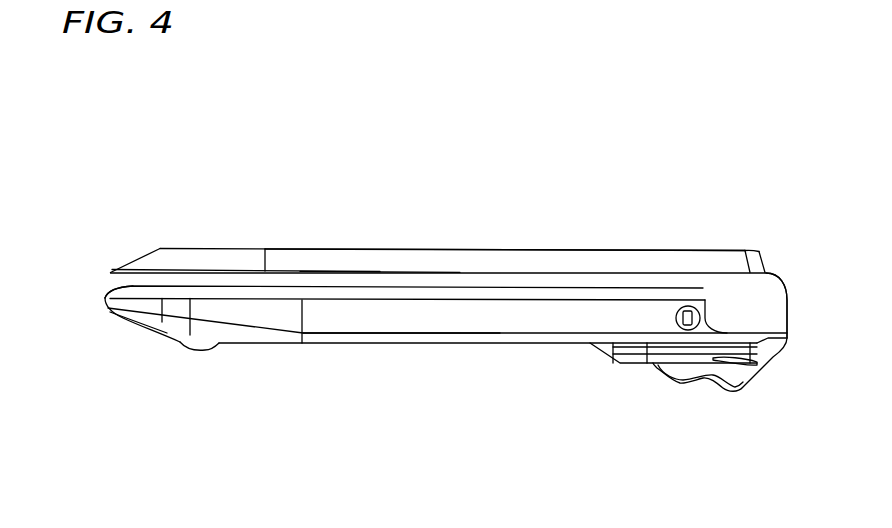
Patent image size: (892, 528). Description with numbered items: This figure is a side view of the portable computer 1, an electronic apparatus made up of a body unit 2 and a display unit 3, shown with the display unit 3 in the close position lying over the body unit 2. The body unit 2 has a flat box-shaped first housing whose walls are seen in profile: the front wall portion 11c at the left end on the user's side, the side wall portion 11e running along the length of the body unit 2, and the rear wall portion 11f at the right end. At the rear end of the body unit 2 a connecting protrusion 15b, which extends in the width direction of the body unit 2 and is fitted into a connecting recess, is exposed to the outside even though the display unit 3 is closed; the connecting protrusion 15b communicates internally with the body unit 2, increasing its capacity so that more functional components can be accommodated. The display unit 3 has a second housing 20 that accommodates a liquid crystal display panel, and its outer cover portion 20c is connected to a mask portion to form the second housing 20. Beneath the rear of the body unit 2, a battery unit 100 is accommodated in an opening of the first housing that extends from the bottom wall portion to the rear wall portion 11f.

The portable computer 1 is at (442, 153).
The body unit 2 is at (225, 376).
The display unit 3 is at (272, 211).
The front wall portion 11c is at (105, 300).
The side wall portion 11e is at (335, 320).
The rear wall portion 11f is at (780, 308).
The connecting protrusion 15b is at (770, 268).
The second housing 20 is at (563, 268).
The cover portion 20c is at (384, 261).
The battery unit 100 is at (673, 426).